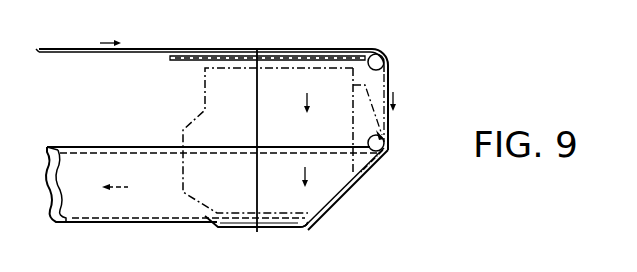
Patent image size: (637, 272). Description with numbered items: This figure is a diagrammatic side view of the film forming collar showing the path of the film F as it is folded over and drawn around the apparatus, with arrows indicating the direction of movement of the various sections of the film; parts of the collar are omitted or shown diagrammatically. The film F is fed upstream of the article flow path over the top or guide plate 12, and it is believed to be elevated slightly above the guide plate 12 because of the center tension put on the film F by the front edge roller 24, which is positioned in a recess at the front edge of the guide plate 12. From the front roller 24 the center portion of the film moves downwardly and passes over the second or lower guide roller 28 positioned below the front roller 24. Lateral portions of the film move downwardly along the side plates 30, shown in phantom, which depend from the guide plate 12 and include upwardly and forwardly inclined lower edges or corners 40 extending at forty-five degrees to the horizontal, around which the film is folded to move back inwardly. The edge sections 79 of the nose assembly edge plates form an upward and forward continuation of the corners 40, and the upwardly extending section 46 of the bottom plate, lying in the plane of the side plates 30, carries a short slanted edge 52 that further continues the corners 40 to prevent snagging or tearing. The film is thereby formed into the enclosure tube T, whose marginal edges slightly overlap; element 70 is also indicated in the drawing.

The film F is at (155, 49).
The top or guide plate 12 is at (187, 60).
The front edge roller 24 is at (386, 56).
The side plates 30 is at (238, 112).
The enclosure tube T is at (90, 160).
The guide wall 70 is at (372, 124).
The second or lower guide roller 28 is at (389, 157).
The edge sections 79 is at (368, 168).
The inclined lower edges or corners 40 is at (340, 198).
The vertically upwardly extending section 46 is at (280, 221).
The short angle or edge 52 is at (308, 227).